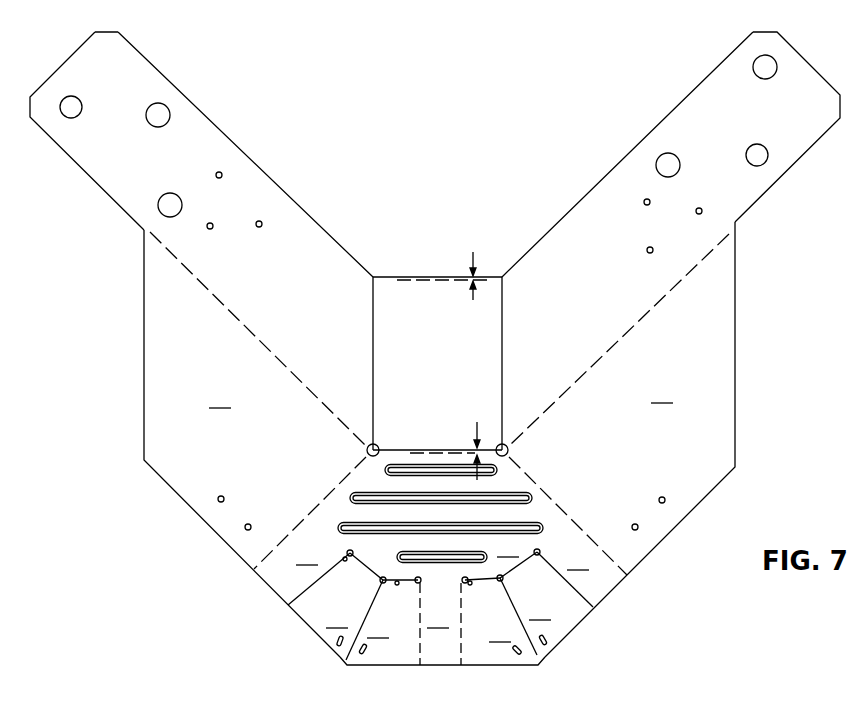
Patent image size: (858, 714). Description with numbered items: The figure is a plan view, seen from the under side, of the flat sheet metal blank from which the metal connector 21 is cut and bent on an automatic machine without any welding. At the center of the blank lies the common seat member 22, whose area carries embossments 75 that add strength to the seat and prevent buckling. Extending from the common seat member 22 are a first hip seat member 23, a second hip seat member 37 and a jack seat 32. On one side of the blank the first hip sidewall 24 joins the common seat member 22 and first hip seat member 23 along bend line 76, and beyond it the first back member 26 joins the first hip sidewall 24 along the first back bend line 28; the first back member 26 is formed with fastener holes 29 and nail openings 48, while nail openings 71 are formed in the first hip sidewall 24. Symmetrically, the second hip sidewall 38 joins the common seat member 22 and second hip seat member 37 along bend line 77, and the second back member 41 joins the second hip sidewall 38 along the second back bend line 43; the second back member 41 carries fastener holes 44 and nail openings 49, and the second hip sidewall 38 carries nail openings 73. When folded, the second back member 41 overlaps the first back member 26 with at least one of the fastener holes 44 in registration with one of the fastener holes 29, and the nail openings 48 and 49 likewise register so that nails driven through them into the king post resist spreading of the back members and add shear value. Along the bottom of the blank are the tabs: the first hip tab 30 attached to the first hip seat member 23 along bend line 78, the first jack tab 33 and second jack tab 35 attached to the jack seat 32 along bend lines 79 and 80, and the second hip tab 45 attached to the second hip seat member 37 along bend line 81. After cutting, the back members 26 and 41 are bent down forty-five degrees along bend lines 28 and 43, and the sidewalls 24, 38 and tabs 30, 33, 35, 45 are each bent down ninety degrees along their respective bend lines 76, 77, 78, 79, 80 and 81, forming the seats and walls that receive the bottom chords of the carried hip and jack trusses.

The metal connector 21 is at (435, 364).
The common seat member 22 is at (443, 417).
The first hip seat member 23 is at (578, 559).
The first hip sidewall 24 is at (640, 439).
The first back member 26 is at (578, 223).
The first back bend line 28 is at (565, 388).
The fastener holes 29 is at (740, 117).
The first hip tab 30 is at (561, 598).
The jack seat 32 is at (438, 617).
The first jack tab 33 is at (505, 616).
The second jack tab 35 is at (380, 620).
The second hip seat member 37 is at (307, 554).
The second hip sidewall 38 is at (242, 443).
The second back member 41 is at (324, 253).
The second back bend line 43 is at (328, 396).
The fastener holes 44 is at (163, 194).
The second hip tab 45 is at (321, 599).
The nail openings 48 is at (696, 213).
The nail openings 49 is at (256, 222).
The nail openings 71 is at (660, 498).
The nail openings 73 is at (224, 497).
The embossments 75 is at (400, 556).
The bend line 76 is at (537, 460).
The bend line 77 is at (270, 558).
The bend line 78 is at (575, 587).
The bend line 79 is at (461, 655).
The bend line 80 is at (424, 655).
The bend line 81 is at (302, 592).